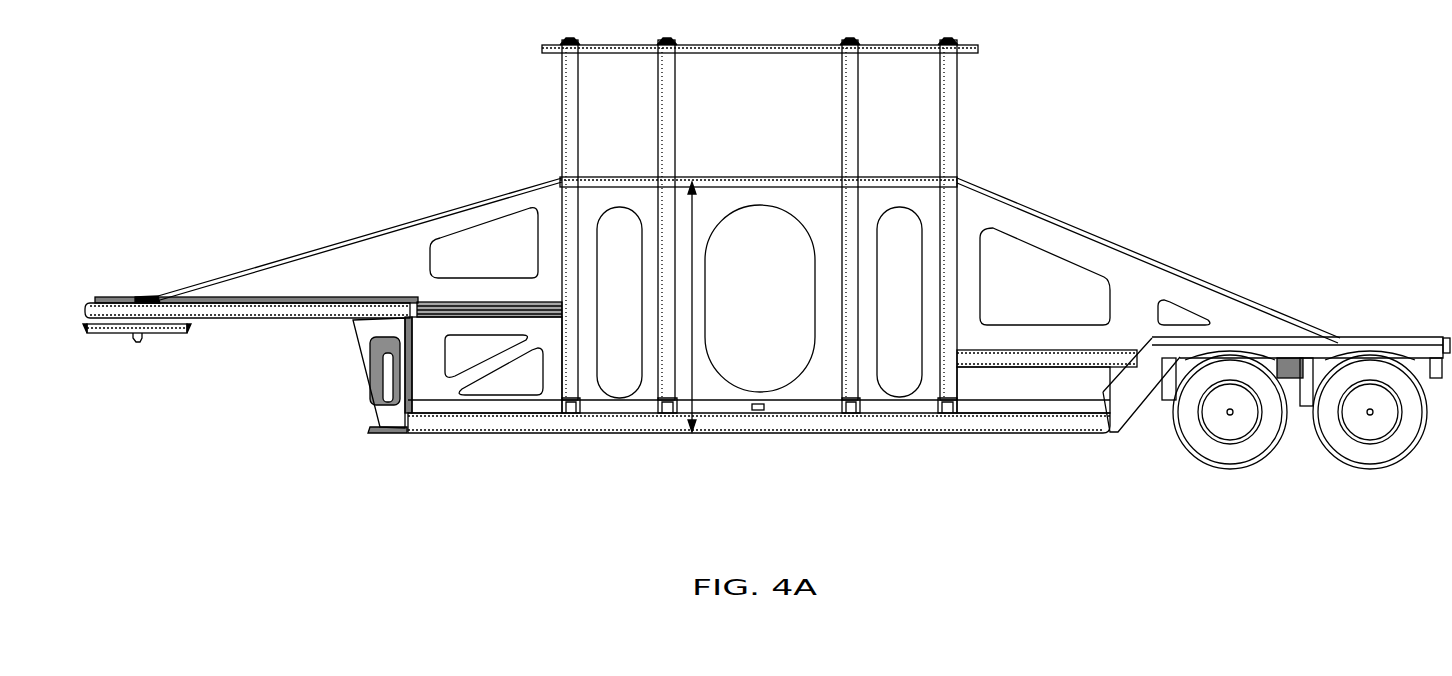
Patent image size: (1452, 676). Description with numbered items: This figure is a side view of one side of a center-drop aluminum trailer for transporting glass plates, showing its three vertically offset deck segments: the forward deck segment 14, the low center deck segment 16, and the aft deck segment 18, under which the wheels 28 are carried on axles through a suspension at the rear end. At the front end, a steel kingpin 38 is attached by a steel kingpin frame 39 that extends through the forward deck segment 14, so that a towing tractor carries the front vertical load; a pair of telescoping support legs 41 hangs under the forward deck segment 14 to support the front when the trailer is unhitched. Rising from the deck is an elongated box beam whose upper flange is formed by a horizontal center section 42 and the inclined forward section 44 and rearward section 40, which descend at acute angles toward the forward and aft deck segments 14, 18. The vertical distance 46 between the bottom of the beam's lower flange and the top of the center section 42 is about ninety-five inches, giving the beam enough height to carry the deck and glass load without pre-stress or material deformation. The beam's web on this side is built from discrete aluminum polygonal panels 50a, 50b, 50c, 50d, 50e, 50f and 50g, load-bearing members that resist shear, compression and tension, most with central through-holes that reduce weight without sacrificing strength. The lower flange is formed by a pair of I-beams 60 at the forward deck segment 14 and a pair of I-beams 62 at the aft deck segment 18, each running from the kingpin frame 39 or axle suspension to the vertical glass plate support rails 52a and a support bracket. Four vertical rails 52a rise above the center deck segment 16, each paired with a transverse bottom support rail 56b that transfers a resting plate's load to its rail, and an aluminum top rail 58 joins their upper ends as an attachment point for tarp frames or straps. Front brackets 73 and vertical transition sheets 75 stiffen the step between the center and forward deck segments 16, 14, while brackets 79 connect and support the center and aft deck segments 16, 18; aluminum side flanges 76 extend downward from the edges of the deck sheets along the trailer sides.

The forward deck segment 14 is at (270, 300).
The center deck segment 16 is at (807, 405).
The aft deck segment 18 is at (1333, 335).
The wheels 28 is at (1233, 450).
The kingpin 38 is at (138, 342).
The kingpin frame 39 is at (125, 298).
The rearward upper flange section 40 is at (1117, 248).
The telescoping support legs 41 is at (372, 412).
The center upper flange section 42 is at (763, 182).
The forward upper flange section 44 is at (483, 200).
The vertical distance 46 is at (691, 307).
The web panel 50a is at (308, 301).
The web panel 50b is at (451, 409).
The web panel 50c is at (606, 209).
The web panel 50d is at (841, 392).
The web panel 50e is at (884, 213).
The web panel 50f is at (989, 223).
The web panel 50g is at (1043, 398).
The vertical glass plate support rails 52a is at (658, 148).
The bottom support rails 56b is at (580, 403).
The top rail 58 is at (542, 52).
The I-beams 60 is at (418, 300).
The I-beams 62 is at (1025, 360).
The front brackets 73 is at (365, 365).
The vertical transition sheets 75 is at (415, 368).
The side flanges 76 is at (1018, 435).
The brackets 79 is at (1132, 393).